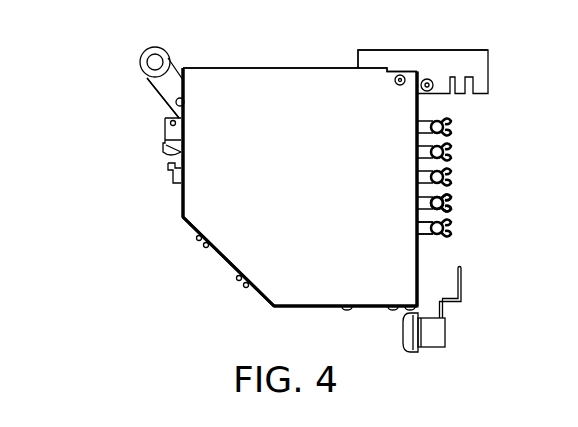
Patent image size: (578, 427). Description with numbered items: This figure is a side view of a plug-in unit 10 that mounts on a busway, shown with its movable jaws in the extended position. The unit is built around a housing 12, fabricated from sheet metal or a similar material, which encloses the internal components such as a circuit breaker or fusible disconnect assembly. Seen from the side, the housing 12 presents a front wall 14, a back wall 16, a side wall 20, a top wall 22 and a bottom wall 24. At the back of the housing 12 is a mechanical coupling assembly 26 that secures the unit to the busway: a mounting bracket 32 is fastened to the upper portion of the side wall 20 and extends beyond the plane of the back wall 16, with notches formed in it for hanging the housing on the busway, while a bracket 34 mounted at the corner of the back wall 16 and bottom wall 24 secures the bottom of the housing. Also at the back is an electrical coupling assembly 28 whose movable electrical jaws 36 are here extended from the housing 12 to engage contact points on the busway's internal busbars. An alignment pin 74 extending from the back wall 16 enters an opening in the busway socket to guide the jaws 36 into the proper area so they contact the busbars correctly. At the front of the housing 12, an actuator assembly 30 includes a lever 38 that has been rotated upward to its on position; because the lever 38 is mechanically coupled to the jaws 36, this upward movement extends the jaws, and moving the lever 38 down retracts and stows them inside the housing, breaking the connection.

The plug-in unit 10 is at (205, 53).
The housing 12 is at (270, 312).
The front wall 14 is at (180, 200).
The back wall 16 is at (422, 272).
The side wall 20 is at (233, 242).
The top wall 22 is at (262, 67).
The bottom wall 24 is at (308, 310).
The mechanical coupling assembly 26 is at (498, 47).
The electrical coupling assembly 28 is at (457, 157).
The actuator assembly 30 is at (139, 52).
The mounting bracket 32 is at (420, 51).
The bracket 34 is at (465, 280).
The movable electrical jaws 36 is at (448, 197).
The lever 38 is at (157, 85).
The alignment pin 74 is at (440, 217).